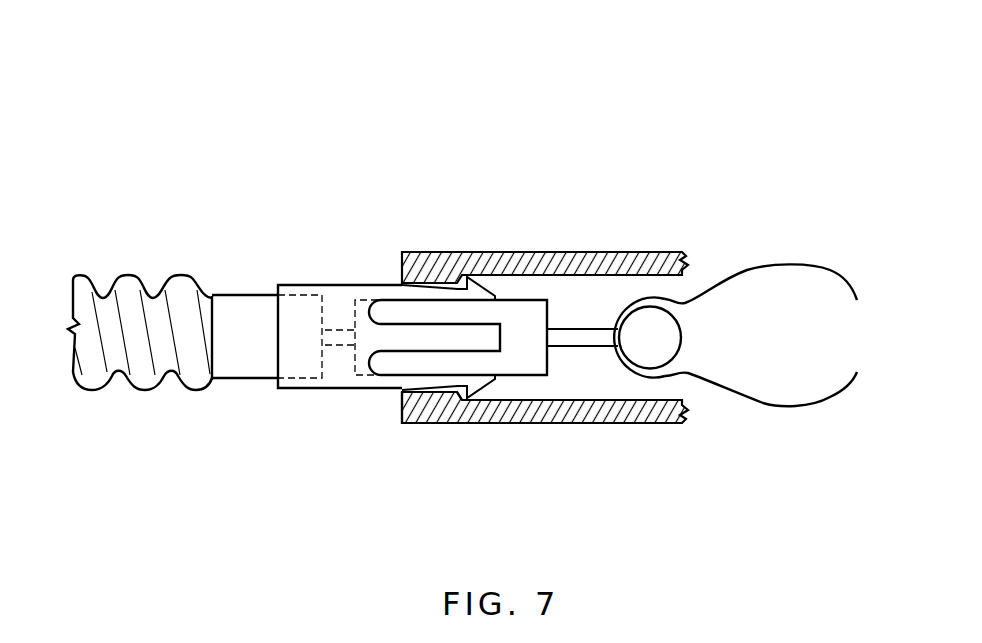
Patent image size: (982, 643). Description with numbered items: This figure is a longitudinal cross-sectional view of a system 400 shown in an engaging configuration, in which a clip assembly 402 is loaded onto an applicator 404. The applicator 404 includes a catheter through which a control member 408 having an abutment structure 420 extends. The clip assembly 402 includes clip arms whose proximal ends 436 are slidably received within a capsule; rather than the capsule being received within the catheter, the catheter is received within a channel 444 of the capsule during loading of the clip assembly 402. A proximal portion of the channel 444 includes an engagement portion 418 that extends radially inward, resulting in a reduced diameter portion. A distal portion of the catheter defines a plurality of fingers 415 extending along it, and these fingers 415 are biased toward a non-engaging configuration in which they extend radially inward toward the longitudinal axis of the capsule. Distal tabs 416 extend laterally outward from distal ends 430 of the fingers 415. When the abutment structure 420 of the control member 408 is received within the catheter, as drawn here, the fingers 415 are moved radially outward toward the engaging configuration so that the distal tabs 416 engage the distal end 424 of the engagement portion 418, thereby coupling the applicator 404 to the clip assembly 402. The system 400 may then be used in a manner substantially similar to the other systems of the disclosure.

The system 400 is at (384, 183).
The clip assembly 402 is at (709, 268).
The applicator 404 is at (245, 268).
The control member 408 is at (583, 330).
The fingers 415 is at (407, 383).
The distal tabs 416 is at (478, 295).
The engagement portion 418 is at (403, 410).
The abutment structure 420 is at (537, 317).
The distal end of the engagement portion 424 is at (447, 403).
The distal ends of the fingers 430 is at (473, 377).
The proximal ends of the clip arms 436 is at (648, 380).
The channel of the capsule 444 is at (592, 390).